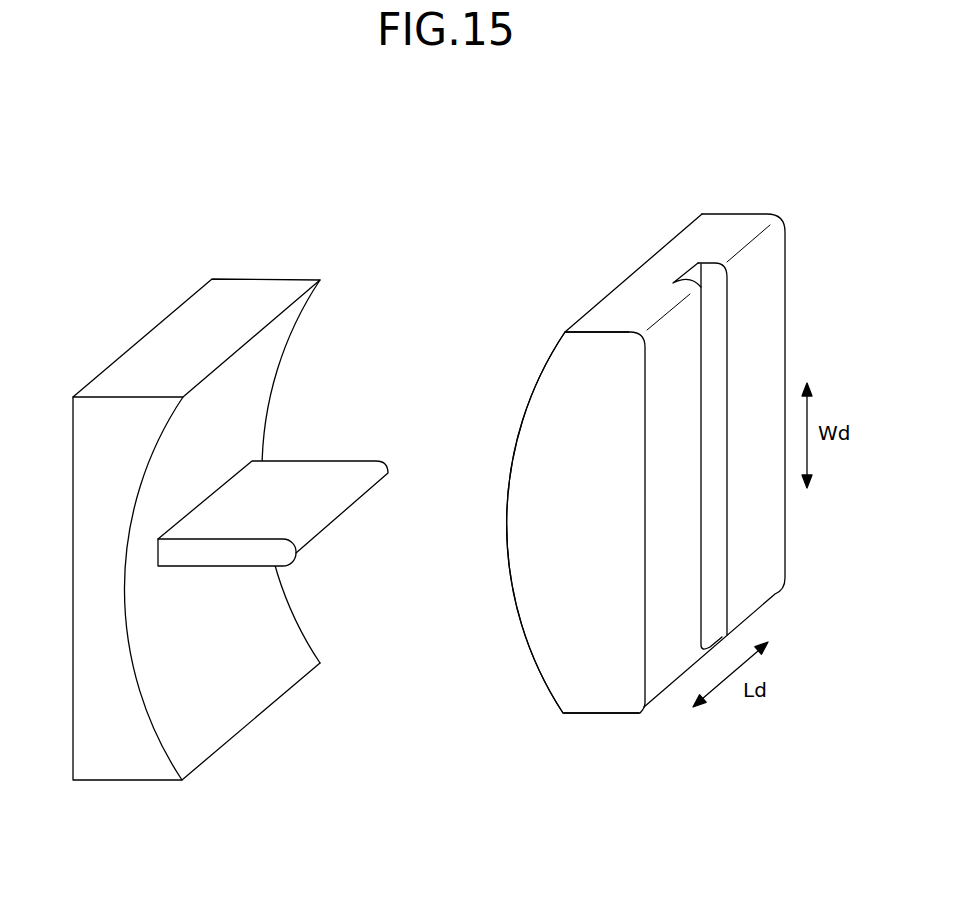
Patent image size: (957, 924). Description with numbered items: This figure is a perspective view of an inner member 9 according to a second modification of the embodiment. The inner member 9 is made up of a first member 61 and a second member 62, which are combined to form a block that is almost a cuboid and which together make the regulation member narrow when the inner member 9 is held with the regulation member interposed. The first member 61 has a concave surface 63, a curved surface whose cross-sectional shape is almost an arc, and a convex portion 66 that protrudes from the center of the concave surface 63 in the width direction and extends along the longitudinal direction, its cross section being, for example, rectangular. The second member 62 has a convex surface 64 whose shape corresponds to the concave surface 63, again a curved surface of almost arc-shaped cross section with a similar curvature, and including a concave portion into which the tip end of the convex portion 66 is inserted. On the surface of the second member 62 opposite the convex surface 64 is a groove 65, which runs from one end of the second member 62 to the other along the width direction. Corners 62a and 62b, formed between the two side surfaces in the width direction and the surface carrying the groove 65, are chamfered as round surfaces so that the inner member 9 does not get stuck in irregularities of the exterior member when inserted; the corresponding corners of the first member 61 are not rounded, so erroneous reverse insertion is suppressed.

The inner member 9 is at (520, 153).
The first member 61 is at (262, 278).
The second member 62 is at (632, 300).
The corner 62a is at (633, 330).
The corner 62b is at (630, 713).
The concave surface 63 is at (223, 727).
The convex surface 64 is at (541, 667).
The groove 65 is at (698, 292).
The convex portion 66 is at (347, 458).